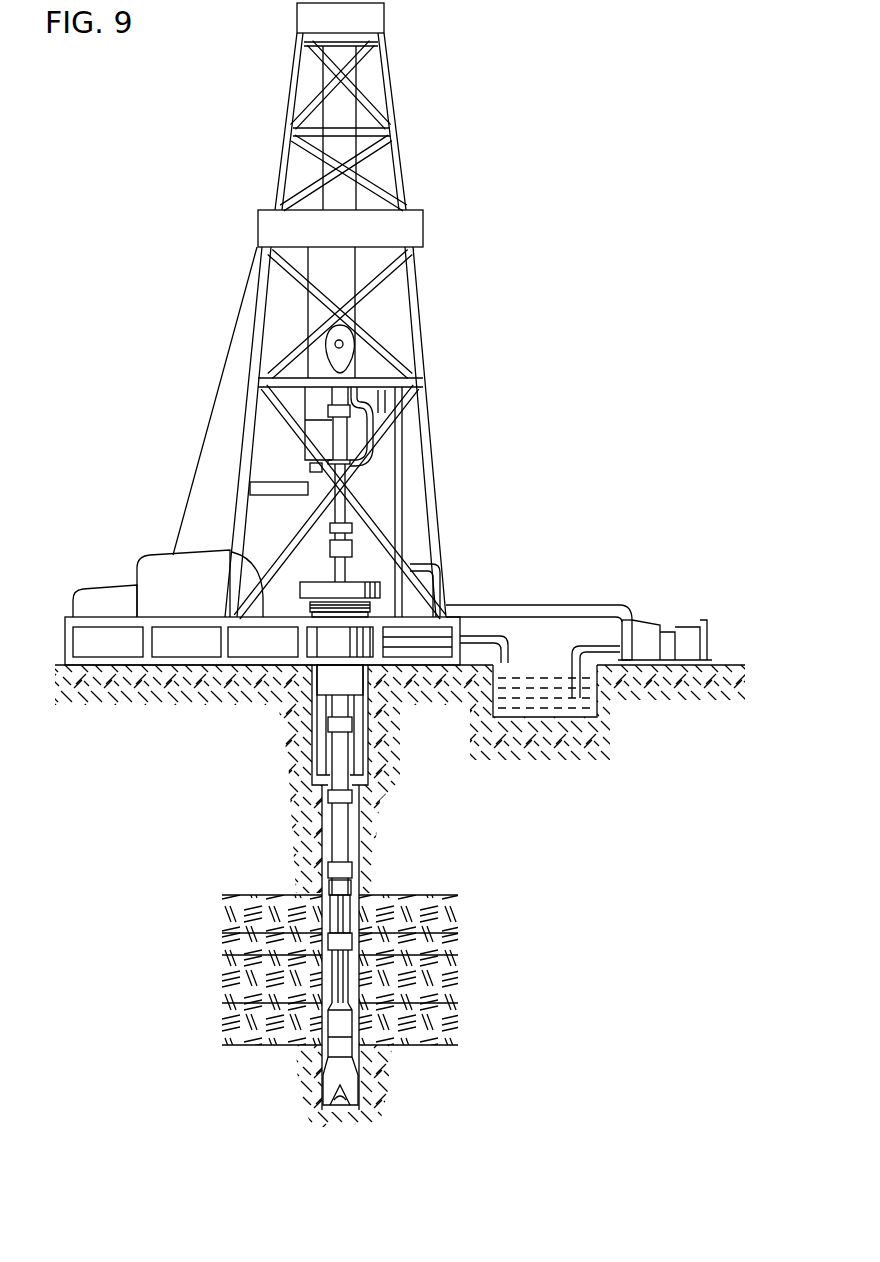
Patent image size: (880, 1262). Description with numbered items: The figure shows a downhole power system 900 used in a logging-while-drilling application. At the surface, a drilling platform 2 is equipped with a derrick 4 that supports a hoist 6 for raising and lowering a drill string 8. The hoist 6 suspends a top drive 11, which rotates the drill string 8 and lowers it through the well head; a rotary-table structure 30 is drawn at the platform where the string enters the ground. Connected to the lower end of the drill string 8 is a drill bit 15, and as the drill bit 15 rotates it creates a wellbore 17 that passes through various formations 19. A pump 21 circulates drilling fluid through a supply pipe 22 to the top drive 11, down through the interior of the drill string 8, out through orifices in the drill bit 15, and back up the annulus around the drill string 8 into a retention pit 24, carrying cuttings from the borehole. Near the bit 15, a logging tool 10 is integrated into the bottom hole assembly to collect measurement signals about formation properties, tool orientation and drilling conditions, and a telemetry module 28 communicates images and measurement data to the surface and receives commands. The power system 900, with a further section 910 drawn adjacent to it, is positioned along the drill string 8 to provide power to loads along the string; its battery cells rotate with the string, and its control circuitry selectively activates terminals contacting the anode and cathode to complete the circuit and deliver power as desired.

The drilling platform 2 is at (65, 640).
The derrick 4 is at (403, 167).
The hoist 6 is at (346, 345).
The drill string 8 is at (371, 906).
The logging tool 10 is at (320, 1068).
The top drive 11 is at (343, 433).
The drill bit 15 is at (355, 1088).
The wellbore 17 is at (360, 858).
The formations 19 is at (483, 895).
The pump 21 is at (640, 640).
The supply pipe 22 is at (553, 605).
The retention pit 24 is at (497, 700).
The telemetry module 28 is at (330, 1025).
The rotary table 30 is at (355, 527).
The power system 900 is at (330, 888).
The sensor module 910 is at (345, 913).